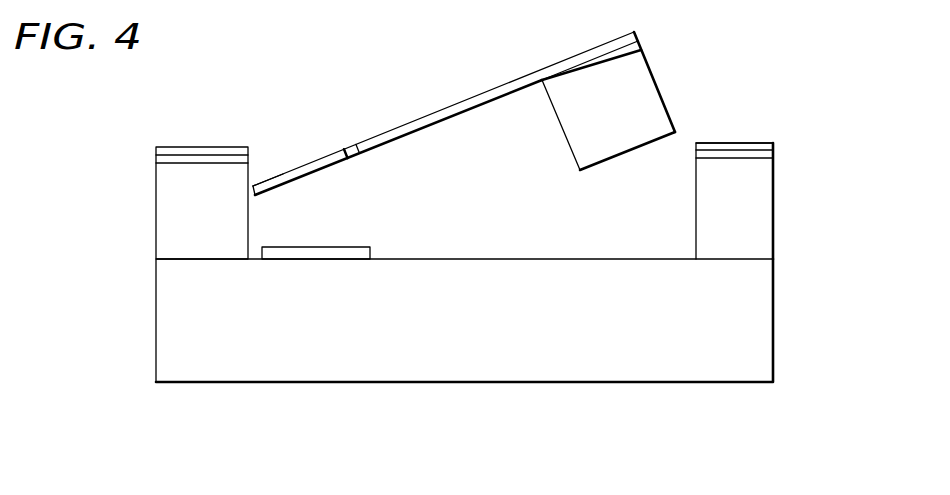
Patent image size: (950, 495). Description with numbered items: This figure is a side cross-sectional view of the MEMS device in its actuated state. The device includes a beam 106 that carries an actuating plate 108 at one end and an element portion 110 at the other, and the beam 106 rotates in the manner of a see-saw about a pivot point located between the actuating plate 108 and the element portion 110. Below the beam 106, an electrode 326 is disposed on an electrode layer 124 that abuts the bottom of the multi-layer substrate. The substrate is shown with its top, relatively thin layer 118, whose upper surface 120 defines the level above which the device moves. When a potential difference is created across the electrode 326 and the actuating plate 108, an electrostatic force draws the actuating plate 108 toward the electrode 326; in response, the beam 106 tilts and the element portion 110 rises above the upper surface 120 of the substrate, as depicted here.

The beam 106 is at (393, 130).
The actuating plate 108 is at (282, 175).
The element portion 110 is at (640, 92).
The top layer 118 is at (770, 150).
The upper surface 120 is at (737, 143).
The electrode layer 124 is at (168, 337).
The electrode 326 is at (327, 246).